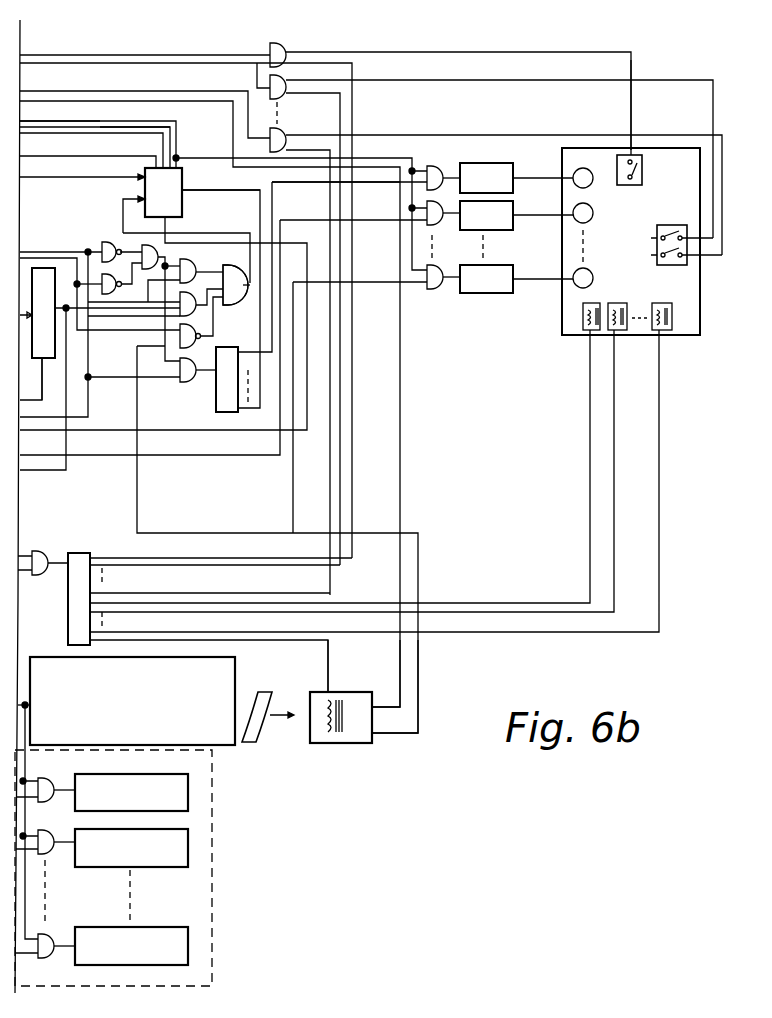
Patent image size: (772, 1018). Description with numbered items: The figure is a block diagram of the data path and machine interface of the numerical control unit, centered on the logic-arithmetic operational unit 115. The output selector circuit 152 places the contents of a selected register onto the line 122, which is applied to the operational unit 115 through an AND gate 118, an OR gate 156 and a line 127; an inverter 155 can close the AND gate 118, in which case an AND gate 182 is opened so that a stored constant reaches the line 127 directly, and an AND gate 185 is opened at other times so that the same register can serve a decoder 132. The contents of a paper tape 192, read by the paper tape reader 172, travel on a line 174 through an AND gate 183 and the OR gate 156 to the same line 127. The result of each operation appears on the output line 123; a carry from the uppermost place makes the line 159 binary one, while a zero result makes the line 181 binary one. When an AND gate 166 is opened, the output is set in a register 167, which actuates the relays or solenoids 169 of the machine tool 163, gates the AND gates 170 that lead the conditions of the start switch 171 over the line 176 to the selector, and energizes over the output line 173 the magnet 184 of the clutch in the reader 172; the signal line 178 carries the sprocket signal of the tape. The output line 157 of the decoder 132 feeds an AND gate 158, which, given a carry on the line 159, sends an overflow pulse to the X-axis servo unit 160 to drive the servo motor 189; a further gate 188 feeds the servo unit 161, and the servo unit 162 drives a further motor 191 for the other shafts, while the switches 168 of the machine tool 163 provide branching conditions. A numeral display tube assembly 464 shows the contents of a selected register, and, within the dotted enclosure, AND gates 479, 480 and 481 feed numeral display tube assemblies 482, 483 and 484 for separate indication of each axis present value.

The logic-arithmetic operational unit 115 is at (186, 172).
The AND gate 118 is at (193, 261).
The line 122 is at (45, 268).
The output line 123 is at (207, 192).
The line 127 is at (179, 233).
The decoder 132 is at (216, 401).
The output selector circuit 152 is at (52, 362).
The inverter 155 is at (103, 243).
The OR gate 156 is at (240, 267).
The output line 157 is at (289, 182).
The AND gate 158 is at (430, 167).
The line 159 is at (133, 121).
The X-axis servo unit 160 is at (500, 160).
The servo unit 161 is at (512, 230).
The servo unit 162 is at (481, 293).
The machine tool 163 is at (562, 328).
The AND gate 166 is at (40, 550).
The register 167 is at (85, 553).
The switches 168 is at (669, 225).
The relays or solenoids 169 is at (667, 333).
The AND gates 170 is at (270, 48).
The start switch 171 is at (642, 166).
The paper tape reader 172 is at (357, 745).
The output line 173 is at (328, 662).
The line 174 is at (418, 714).
The line 176 is at (631, 63).
The signal line 178 is at (397, 697).
The line 181 is at (72, 121).
The AND gate 182 is at (236, 304).
The AND gate 183 is at (180, 335).
The magnet 184 is at (322, 730).
The AND gate 185 is at (178, 382).
The AND gate 188 is at (440, 230).
The servo motor 189 is at (591, 183).
The lamp 191 is at (592, 282).
The paper tape 192 is at (257, 692).
The numeral display tube assembly 464 is at (50, 657).
The AND gate 479 is at (50, 779).
The AND gate 480 is at (54, 835).
The AND gate 481 is at (50, 935).
The numeral display tube assembly 482 is at (188, 800).
The numeral display tube assembly 483 is at (188, 866).
The numeral display tube assembly 484 is at (188, 937).